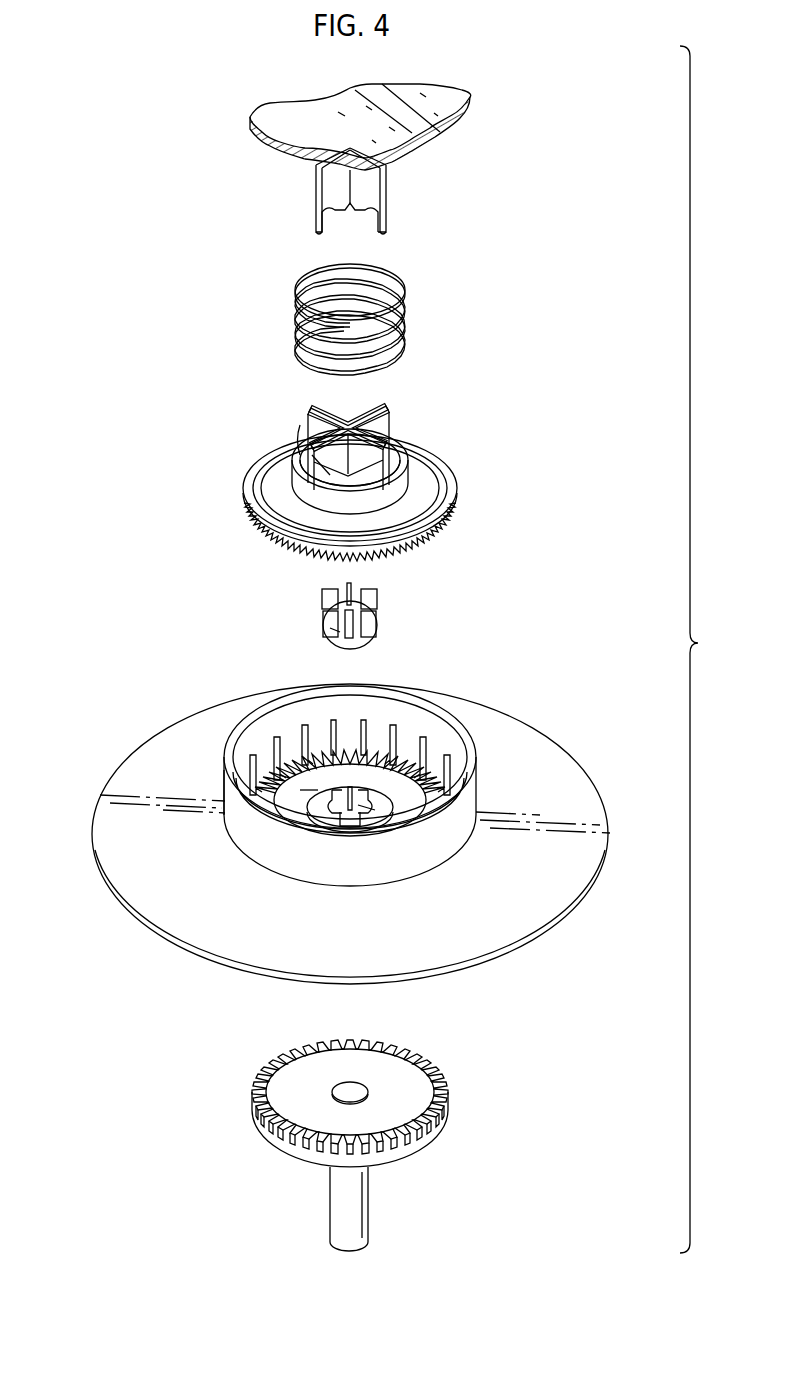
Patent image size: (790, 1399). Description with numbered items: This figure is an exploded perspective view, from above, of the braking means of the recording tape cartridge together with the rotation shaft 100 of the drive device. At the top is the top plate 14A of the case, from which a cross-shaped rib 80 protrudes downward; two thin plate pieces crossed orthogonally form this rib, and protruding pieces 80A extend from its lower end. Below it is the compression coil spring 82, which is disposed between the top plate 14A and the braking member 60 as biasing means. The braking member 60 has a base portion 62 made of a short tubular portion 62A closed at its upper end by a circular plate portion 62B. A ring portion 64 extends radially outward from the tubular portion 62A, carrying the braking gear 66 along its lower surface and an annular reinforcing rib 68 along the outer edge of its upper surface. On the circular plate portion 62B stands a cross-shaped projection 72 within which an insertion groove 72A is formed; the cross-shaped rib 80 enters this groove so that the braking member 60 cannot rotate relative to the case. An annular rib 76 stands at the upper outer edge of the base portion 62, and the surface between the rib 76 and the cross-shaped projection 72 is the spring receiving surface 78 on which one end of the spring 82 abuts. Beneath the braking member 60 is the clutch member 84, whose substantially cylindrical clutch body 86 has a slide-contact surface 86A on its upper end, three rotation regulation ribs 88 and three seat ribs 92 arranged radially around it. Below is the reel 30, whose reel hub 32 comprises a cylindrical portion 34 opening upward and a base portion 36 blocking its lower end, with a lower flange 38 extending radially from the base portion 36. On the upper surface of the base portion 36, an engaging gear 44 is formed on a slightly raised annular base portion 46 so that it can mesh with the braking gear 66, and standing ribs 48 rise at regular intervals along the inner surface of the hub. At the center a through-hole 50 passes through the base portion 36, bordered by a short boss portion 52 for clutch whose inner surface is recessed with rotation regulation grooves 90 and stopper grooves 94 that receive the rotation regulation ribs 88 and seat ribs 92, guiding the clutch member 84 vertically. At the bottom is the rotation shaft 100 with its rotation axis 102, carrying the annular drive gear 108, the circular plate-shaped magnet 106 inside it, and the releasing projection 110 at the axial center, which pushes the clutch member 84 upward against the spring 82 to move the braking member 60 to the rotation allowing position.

The top plate 14A is at (428, 103).
The cross-shaped rib 80 is at (370, 196).
The protruding piece 80A is at (322, 232).
The compression coil spring 82 is at (422, 308).
The insertion groove 72A is at (365, 410).
The cross-shaped projection 72 is at (354, 431).
The annular rib 76 is at (305, 433).
The ring portion 64 is at (422, 468).
The spring receiving surface 78 is at (305, 436).
The reinforcing rib 68 is at (445, 456).
The braking member 60 is at (342, 470).
The base portion 62 is at (276, 478).
The tubular portion 62A is at (295, 487).
The circular plate portion 62B is at (292, 458).
The braking gear 66 is at (424, 540).
The rotation regulation rib 88 is at (350, 590).
The seat rib 92 is at (335, 600).
The clutch member 84 is at (387, 623).
The slide-contact surface 86A is at (340, 640).
The clutch body 86 is at (365, 638).
The base portion 36 is at (410, 722).
The cylindrical portion 34 is at (452, 736).
The reel hub 32 is at (404, 763).
The standing ribs 48 is at (302, 726).
The reel 30 is at (381, 812).
The lower flange 38 is at (580, 853).
The engaging gear 44 is at (240, 840).
The annular base portion 46 is at (295, 795).
The boss portion for clutch 52 is at (318, 792).
The stopper groove 94 is at (345, 812).
The through-hole 50 is at (360, 812).
The rotation regulation groove 90 is at (375, 816).
The magnet 106 is at (325, 1070).
The releasing projection 110 is at (350, 1090).
The drive gear 108 is at (420, 1060).
The rotation shaft 100 is at (397, 1127).
The rotation axis 102 is at (366, 1206).